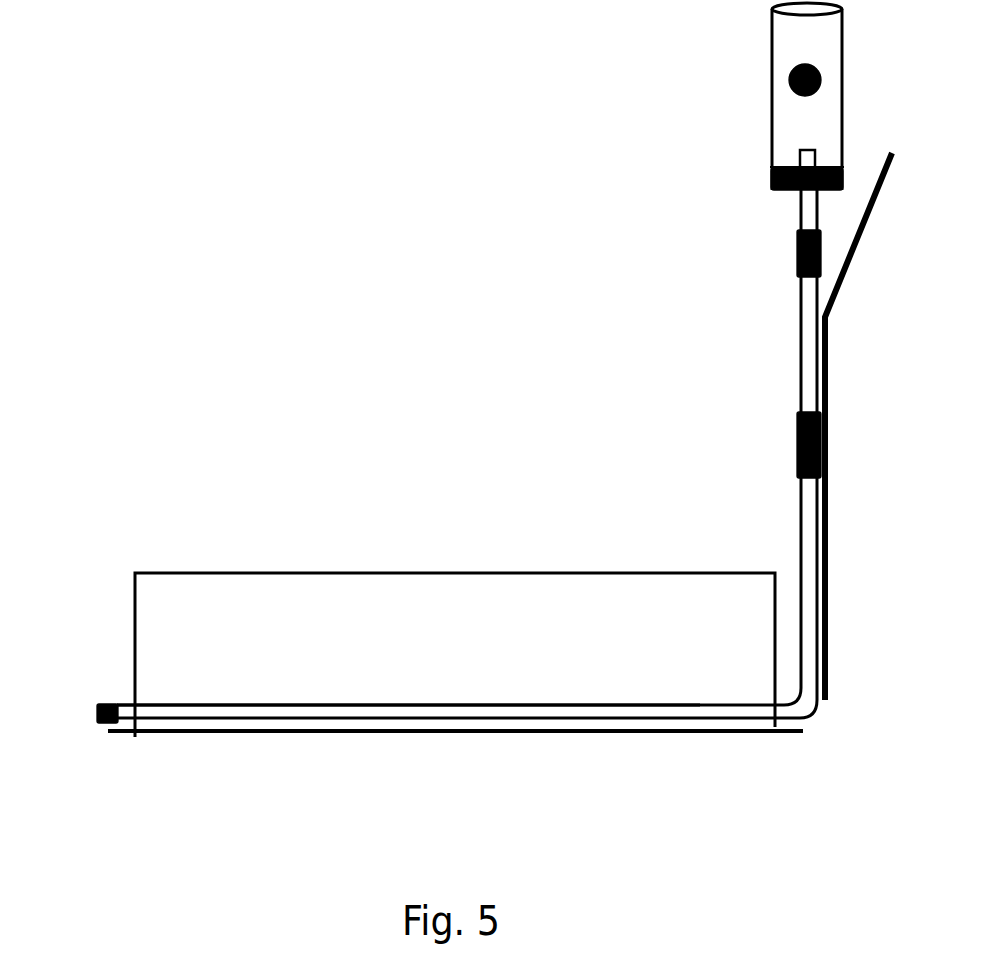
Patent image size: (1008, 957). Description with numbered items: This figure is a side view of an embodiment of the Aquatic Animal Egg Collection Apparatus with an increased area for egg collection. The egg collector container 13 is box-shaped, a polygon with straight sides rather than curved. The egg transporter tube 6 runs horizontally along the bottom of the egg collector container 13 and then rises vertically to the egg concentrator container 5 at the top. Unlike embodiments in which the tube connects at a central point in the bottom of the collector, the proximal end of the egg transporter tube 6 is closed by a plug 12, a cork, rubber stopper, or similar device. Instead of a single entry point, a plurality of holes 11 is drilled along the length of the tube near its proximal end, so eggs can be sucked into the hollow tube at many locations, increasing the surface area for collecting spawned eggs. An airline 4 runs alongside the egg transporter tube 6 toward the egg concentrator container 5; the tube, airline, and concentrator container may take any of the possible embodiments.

The airline 4 is at (860, 302).
The egg concentrator container 5 is at (742, 110).
The egg transporter tube 6 is at (779, 393).
The lower section of egg transporter apparatus with holes 11 is at (491, 679).
The plug in proximal end of egg transporter apparatus 12 is at (72, 677).
The egg collector apparatus (box-shaped) 13 is at (170, 546).